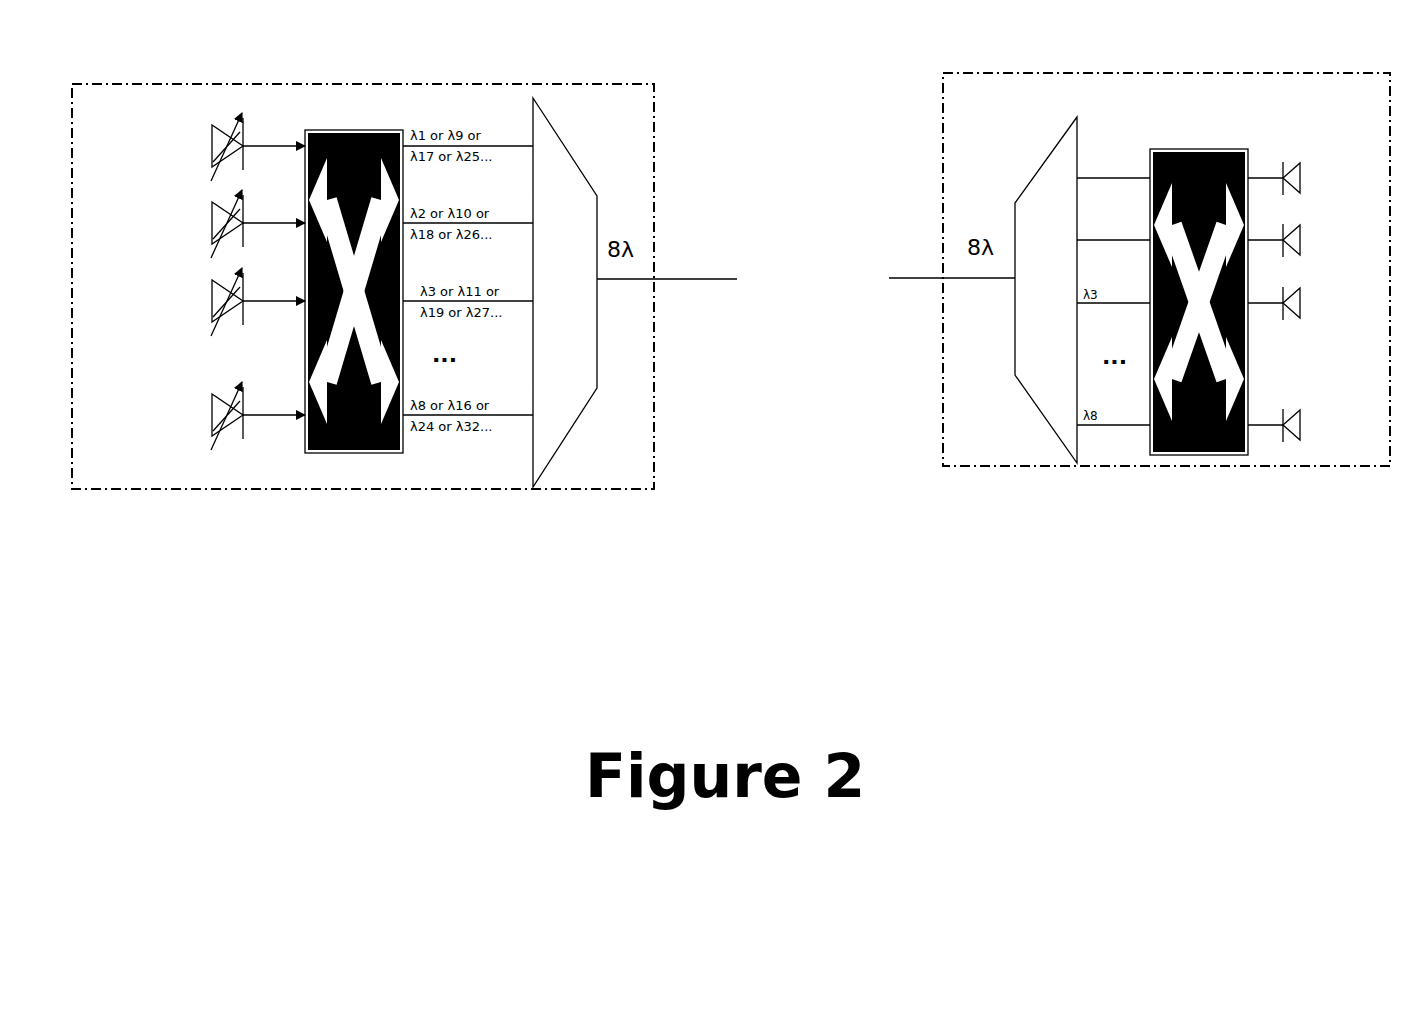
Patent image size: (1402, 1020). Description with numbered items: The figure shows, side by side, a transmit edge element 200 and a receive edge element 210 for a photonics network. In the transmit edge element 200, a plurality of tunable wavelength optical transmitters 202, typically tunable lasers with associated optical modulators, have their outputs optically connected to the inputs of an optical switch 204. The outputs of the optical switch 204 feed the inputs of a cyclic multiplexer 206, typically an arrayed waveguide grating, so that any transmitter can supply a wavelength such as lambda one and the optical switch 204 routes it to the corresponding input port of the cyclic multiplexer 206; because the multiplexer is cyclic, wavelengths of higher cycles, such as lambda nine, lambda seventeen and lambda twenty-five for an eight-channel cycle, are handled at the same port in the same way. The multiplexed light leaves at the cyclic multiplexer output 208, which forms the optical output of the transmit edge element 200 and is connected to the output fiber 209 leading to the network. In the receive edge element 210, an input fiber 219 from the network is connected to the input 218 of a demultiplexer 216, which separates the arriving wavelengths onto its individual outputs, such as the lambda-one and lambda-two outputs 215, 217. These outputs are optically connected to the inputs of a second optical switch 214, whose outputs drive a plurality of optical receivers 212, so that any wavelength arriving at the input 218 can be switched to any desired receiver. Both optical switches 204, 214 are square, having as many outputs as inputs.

The transmit edge element 200 is at (163, 80).
The tunable wavelength optical transmitters 202 is at (198, 410).
The optical switch 204 is at (337, 130).
The cyclic multiplexer 206 is at (563, 146).
The cyclic multiplexer output 208 is at (598, 292).
The output fiber 209 is at (710, 278).
The receive edge element 210 is at (1046, 68).
The optical receivers 212 is at (1306, 420).
The optical switch 214 is at (1232, 148).
The first wavelength channel output 215 is at (1102, 162).
The demultiplexer 216 is at (1030, 176).
The second wavelength channel output 217 is at (1100, 236).
The demultiplexer input 218 is at (1012, 281).
The input fiber 219 is at (913, 276).